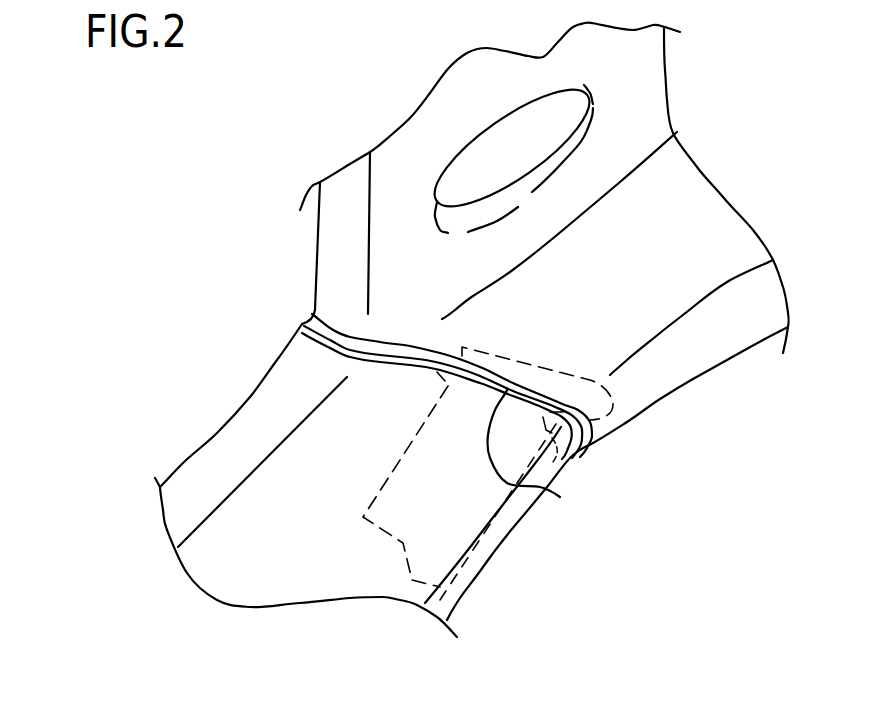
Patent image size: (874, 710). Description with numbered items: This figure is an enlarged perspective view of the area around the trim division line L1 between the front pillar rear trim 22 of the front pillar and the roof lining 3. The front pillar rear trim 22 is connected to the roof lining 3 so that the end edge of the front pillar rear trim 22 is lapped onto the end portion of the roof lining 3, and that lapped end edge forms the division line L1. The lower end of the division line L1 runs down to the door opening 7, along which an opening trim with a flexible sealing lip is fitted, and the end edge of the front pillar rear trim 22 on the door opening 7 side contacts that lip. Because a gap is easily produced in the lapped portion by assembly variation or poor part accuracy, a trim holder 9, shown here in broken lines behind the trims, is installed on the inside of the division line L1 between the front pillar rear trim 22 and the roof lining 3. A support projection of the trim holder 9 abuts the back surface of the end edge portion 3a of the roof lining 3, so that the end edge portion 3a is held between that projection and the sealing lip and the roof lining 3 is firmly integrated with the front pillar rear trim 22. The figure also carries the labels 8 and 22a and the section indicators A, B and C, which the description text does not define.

The roof lining 3 is at (700, 213).
The end edge portion 3a is at (693, 380).
The door opening 7 is at (795, 548).
The left side region 8 is at (173, 222).
The trim holder 9 is at (495, 553).
The front pillar rear trim 22 is at (218, 567).
The arm rim strip 22a is at (458, 592).
The division line L1 is at (544, 458).
The section A is at (105, 433).
The section B is at (175, 372).
The section C is at (255, 303).